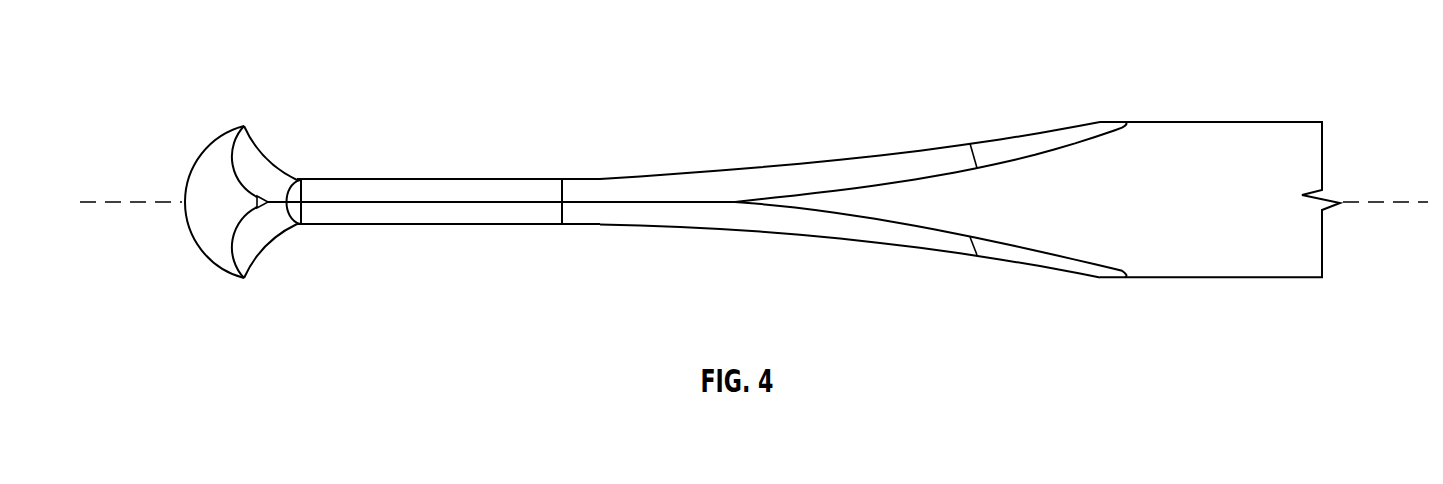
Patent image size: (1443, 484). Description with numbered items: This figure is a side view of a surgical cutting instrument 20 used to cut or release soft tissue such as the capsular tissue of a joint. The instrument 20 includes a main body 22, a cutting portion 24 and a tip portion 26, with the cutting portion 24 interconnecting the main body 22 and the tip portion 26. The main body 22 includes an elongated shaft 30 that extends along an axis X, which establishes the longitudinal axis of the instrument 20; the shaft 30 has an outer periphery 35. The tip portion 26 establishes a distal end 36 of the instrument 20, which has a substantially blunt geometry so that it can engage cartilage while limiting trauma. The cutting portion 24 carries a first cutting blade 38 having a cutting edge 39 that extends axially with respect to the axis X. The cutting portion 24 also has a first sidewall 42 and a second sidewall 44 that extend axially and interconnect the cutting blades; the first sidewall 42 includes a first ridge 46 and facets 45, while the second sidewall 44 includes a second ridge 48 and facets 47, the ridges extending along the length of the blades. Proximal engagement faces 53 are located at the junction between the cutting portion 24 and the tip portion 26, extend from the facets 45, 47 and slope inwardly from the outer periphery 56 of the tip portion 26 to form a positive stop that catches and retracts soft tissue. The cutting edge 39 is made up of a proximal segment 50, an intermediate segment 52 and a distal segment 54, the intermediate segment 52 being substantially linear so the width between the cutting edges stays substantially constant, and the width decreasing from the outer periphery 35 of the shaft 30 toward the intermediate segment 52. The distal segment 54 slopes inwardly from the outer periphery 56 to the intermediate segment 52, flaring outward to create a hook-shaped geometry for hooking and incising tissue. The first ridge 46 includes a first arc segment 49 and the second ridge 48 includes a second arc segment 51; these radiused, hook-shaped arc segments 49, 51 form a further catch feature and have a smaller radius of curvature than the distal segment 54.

The surgical instrument 20 is at (229, 52).
The main body 22 is at (1216, 118).
The cutting portion 24 is at (345, 60).
The tip portion 26 is at (190, 134).
The elongated shaft 30 is at (1307, 153).
The outer periphery of the shaft 35 is at (843, 207).
The distal end 36 is at (181, 202).
The first cutting blade 38 is at (480, 202).
The cutting edge 39 is at (480, 202).
The first sidewall 42 is at (423, 193).
The second sidewall 44 is at (440, 217).
The facets 45 is at (378, 187).
The first ridge 46 is at (540, 177).
The facets 47 is at (395, 213).
The second ridge 48 is at (505, 225).
The first arc segment 49 is at (253, 143).
The proximal segment 50 is at (725, 200).
The second arc segment 51 is at (247, 278).
The intermediate segment 52 is at (360, 205).
The proximal engagement faces 53 is at (253, 163).
The distal segment 54 is at (297, 180).
The outer periphery of the tip portion 56 is at (243, 127).
The axis X is at (1406, 205).